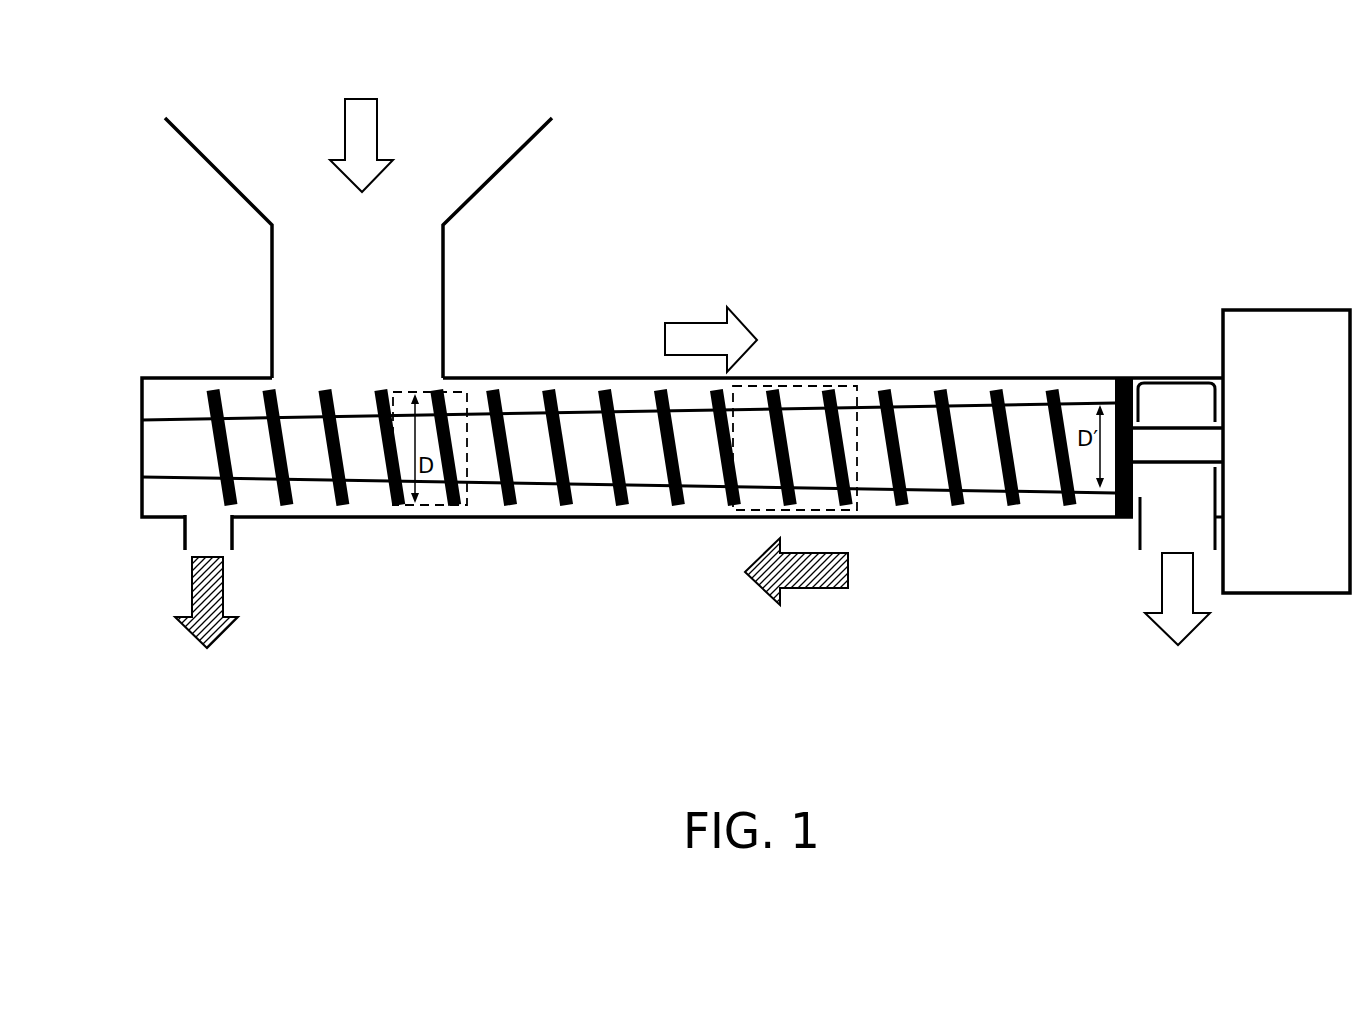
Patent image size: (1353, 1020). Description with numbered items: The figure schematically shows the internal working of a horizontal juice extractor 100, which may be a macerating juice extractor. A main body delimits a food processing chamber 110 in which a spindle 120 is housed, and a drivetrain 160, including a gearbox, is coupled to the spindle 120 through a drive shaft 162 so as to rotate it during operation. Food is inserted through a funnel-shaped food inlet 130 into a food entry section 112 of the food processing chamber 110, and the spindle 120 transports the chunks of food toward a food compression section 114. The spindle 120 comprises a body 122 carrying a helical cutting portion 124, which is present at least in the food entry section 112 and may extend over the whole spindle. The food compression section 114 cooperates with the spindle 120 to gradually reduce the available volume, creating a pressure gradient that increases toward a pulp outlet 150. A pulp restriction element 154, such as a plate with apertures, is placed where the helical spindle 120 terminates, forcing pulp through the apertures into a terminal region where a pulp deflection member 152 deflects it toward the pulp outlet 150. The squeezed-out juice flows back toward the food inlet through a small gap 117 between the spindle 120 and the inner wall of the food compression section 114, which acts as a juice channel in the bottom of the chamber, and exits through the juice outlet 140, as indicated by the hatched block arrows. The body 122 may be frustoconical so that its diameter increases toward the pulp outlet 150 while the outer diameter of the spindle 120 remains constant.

The horizontal juice extractor 100 is at (418, 688).
The food processing chamber 110 is at (945, 505).
The food entry section 112 is at (260, 505).
The food compression section 114 is at (637, 507).
The gap 117 is at (883, 505).
The spindle 120 is at (528, 472).
The body 122 is at (625, 410).
The helical cutting portion 124 is at (347, 505).
The food inlet 130 is at (285, 275).
The juice outlet 140 is at (180, 535).
The pulp outlet 150 is at (1152, 555).
The pulp deflection member 152 is at (1197, 383).
The pulp restriction element 154 is at (1118, 520).
The drivetrain 160 is at (1308, 593).
The drive shaft 162 is at (1158, 423).